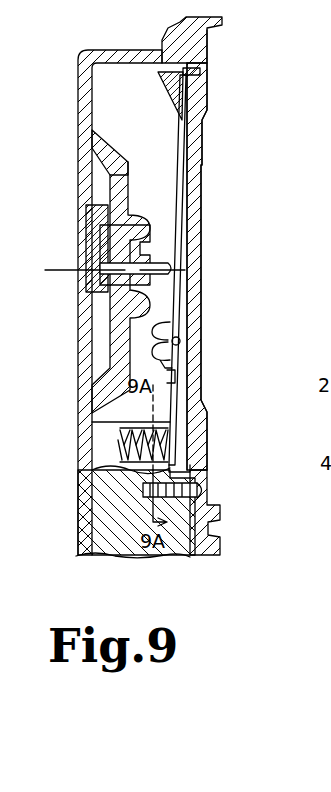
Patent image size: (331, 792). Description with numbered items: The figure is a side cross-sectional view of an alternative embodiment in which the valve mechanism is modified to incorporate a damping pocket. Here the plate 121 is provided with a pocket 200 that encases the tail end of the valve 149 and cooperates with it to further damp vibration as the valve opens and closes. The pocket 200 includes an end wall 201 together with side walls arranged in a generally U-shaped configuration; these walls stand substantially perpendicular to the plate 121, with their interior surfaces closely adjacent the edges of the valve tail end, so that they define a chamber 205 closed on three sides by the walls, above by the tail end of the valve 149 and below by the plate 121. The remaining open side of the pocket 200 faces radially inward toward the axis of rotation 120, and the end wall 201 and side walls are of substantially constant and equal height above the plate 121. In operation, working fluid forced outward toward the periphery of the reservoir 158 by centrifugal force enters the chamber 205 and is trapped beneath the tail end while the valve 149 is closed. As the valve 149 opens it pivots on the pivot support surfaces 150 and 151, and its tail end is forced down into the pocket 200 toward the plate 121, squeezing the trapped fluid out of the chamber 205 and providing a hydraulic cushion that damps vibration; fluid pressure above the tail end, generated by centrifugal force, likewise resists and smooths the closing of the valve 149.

The reservoir 158 is at (110, 107).
The axis of rotation 120 is at (60, 270).
The valve 149 is at (182, 192).
The pivot support surface 150 is at (188, 323).
The pivot support surface 151 is at (182, 340).
The chamber 205 is at (208, 408).
The plate 121 is at (199, 456).
The pocket 200 is at (158, 408).
The end wall 201 is at (165, 467).